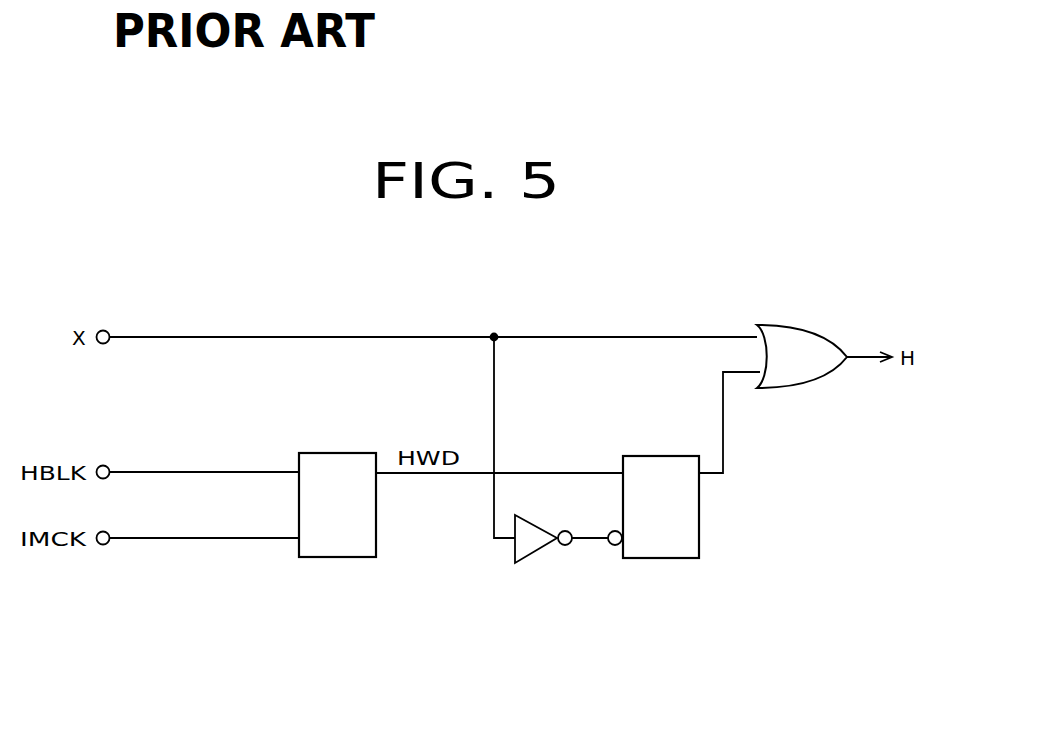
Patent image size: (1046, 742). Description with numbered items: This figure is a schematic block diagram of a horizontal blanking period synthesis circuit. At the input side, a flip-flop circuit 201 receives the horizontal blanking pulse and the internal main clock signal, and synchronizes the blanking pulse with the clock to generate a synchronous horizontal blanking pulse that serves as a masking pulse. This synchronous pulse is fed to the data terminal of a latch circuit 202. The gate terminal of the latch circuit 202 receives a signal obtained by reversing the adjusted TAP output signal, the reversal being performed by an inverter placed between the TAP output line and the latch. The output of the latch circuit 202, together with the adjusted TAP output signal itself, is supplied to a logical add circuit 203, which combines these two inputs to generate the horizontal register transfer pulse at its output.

The flip-flop circuit 201 is at (338, 557).
The latch circuit 202 is at (663, 558).
The logical add circuit 203 is at (800, 388).